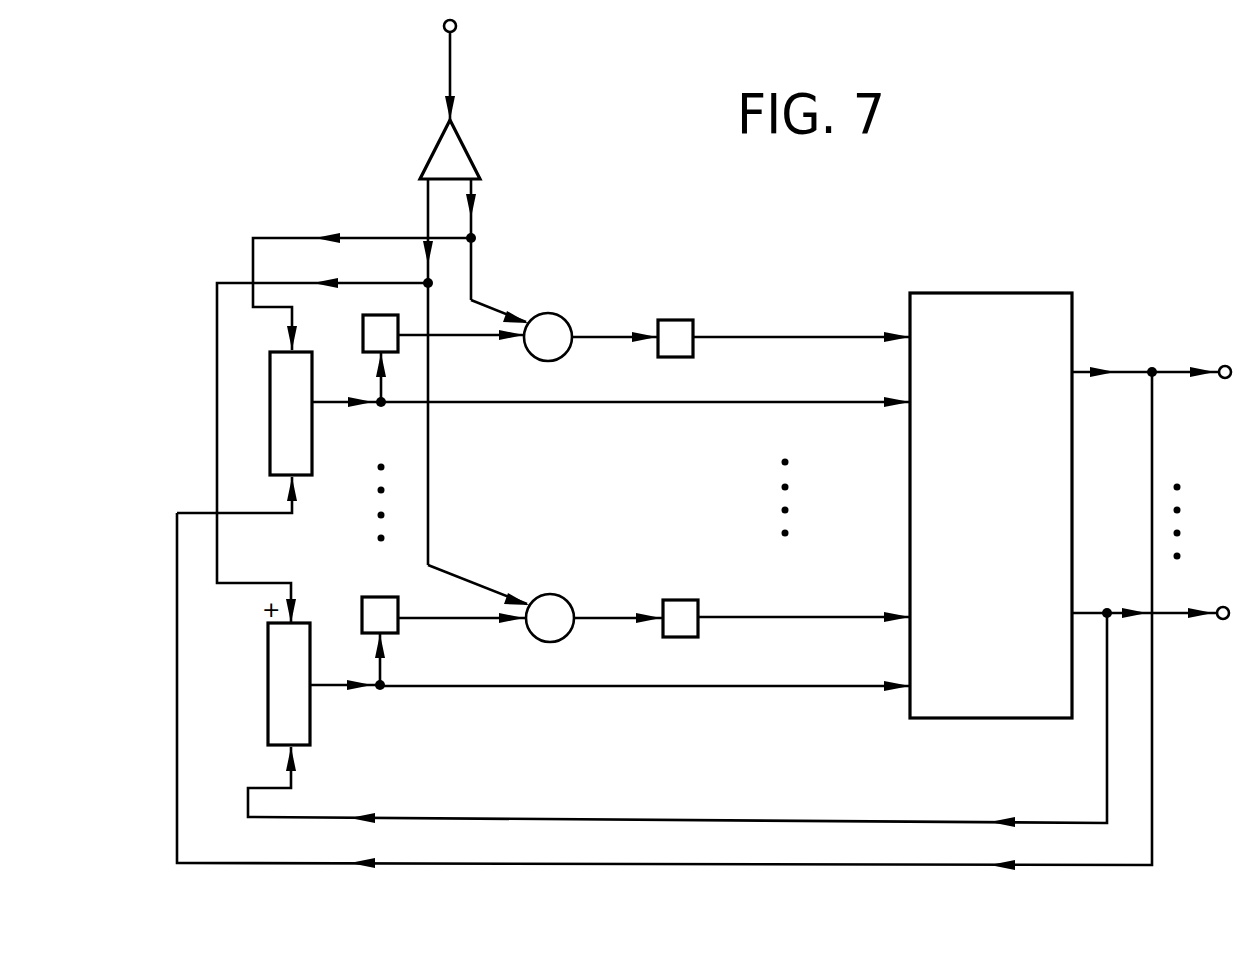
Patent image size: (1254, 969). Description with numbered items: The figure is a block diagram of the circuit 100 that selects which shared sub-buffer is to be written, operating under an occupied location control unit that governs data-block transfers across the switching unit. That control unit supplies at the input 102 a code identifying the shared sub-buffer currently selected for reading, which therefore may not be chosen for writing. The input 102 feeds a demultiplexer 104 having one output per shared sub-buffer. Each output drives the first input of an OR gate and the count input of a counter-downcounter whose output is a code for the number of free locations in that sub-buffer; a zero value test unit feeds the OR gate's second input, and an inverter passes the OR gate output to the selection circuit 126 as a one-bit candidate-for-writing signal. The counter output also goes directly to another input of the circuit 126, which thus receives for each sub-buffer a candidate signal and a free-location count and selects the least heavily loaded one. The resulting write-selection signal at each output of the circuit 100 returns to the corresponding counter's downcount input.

The circuit for selecting a shared sub-buffer to write 100 is at (940, 229).
The input 102 is at (457, 28).
The p-output demultiplexer 104 is at (453, 152).
The circuit for selecting the least heavily loaded shared sub-buffer 126 is at (1002, 505).